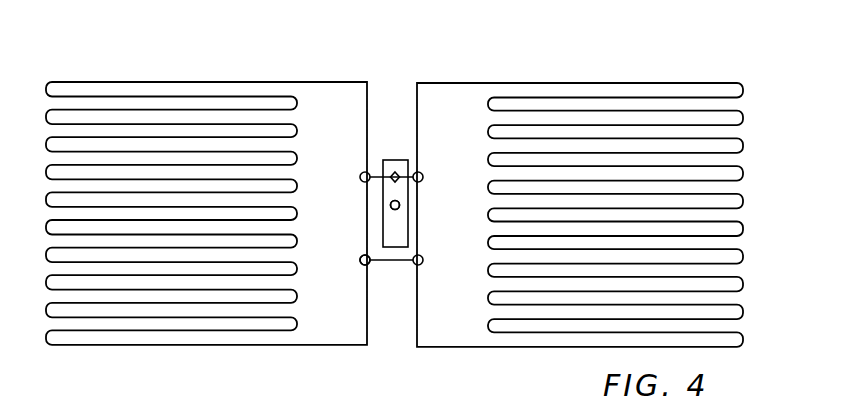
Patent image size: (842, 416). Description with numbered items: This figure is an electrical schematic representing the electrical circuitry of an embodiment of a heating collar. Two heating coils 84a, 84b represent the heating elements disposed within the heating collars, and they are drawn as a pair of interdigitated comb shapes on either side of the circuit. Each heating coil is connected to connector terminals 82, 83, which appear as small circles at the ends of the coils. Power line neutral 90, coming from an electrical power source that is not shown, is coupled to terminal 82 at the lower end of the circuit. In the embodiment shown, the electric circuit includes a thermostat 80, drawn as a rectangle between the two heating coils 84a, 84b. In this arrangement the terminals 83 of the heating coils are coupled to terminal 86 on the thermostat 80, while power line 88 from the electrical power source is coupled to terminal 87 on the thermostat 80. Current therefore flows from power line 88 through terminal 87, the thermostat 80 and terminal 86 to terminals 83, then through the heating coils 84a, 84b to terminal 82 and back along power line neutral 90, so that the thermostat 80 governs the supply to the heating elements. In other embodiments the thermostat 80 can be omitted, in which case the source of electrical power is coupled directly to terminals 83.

The heating coil 84a is at (132, 82).
The heating coil 84b is at (630, 82).
The thermostat 80 is at (398, 228).
The connector terminal 82 is at (369, 264).
The connector terminal 83 is at (360, 172).
The terminal 86 is at (395, 168).
The terminal 87 is at (400, 206).
The power line 88 is at (390, 205).
The power line neutral 90 is at (360, 262).